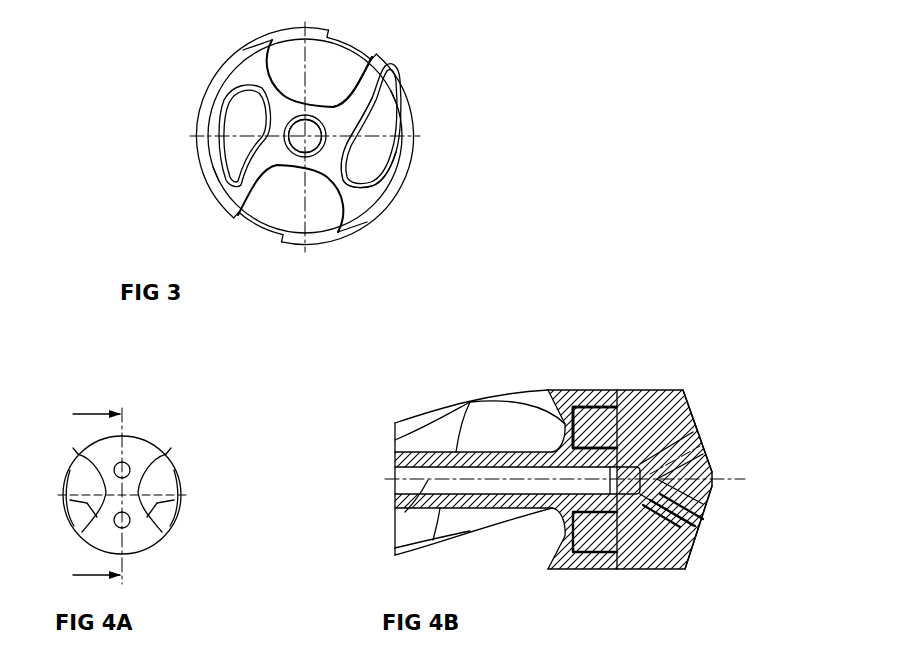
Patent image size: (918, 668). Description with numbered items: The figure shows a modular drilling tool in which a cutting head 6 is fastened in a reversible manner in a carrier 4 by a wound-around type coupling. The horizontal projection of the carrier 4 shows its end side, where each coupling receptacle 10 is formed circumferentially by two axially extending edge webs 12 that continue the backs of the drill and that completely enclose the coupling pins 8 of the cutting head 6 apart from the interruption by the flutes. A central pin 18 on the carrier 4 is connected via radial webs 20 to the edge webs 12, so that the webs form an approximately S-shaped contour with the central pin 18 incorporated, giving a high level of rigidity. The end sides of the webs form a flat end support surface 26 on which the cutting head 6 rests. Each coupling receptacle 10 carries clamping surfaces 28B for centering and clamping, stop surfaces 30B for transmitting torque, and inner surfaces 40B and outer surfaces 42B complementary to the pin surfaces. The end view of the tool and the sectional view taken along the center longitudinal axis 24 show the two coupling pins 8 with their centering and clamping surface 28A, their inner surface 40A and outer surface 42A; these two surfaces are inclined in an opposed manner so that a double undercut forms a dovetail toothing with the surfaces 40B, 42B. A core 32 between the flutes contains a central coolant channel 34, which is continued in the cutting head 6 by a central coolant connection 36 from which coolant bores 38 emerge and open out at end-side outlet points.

In FIG. 3, the carrier 4 is at (126, 88).
In FIG. 4B, the carrier 4 is at (418, 460).
In FIG. 4B, the cutting head 6 is at (665, 418).
In FIG. 4B, the coupling pins 8 is at (590, 427).
In FIG. 3, the coupling receptacles 10 is at (240, 143).
In FIG. 3, the edge webs 12 is at (218, 177).
In FIG. 4B, the central pin 18 is at (686, 569).
In FIG. 3, the radial webs 20 is at (303, 140).
In FIG. 4B, the center longitudinal axis 24 is at (395, 510).
In FIG. 3, the end support surface 26 is at (410, 160).
In FIG. 4B, the centering and clamping surface 28A is at (738, 360).
In FIG. 3, the clamping surfaces 28B is at (367, 143).
In FIG. 3, the stop surfaces 30B is at (367, 182).
In FIG. 3, the core 32 is at (371, 59).
In FIG. 3, the central coolant channel 34 is at (300, 158).
In FIG. 4B, the central coolant channel 34 is at (523, 485).
In FIG. 4B, the central coolant connection 36 is at (697, 536).
In FIG. 4B, the coolant bores 38 is at (687, 503).
In FIG. 4B, the inner surface 40A is at (705, 432).
In FIG. 3, the inner surfaces 40B is at (370, 168).
In FIG. 4B, the outer surface 42A is at (577, 408).
In FIG. 3, the outer surfaces 42B is at (382, 152).